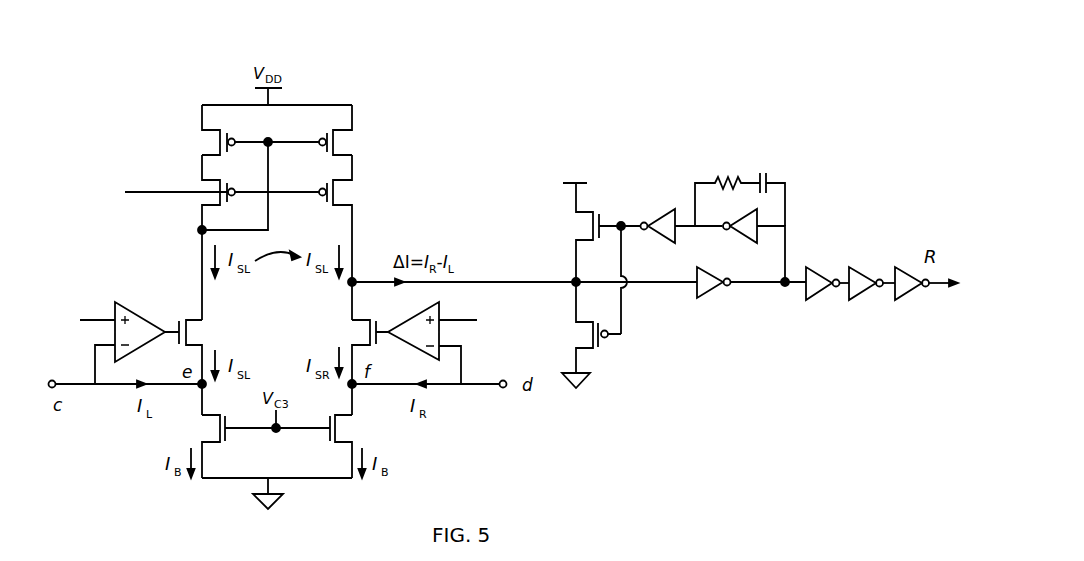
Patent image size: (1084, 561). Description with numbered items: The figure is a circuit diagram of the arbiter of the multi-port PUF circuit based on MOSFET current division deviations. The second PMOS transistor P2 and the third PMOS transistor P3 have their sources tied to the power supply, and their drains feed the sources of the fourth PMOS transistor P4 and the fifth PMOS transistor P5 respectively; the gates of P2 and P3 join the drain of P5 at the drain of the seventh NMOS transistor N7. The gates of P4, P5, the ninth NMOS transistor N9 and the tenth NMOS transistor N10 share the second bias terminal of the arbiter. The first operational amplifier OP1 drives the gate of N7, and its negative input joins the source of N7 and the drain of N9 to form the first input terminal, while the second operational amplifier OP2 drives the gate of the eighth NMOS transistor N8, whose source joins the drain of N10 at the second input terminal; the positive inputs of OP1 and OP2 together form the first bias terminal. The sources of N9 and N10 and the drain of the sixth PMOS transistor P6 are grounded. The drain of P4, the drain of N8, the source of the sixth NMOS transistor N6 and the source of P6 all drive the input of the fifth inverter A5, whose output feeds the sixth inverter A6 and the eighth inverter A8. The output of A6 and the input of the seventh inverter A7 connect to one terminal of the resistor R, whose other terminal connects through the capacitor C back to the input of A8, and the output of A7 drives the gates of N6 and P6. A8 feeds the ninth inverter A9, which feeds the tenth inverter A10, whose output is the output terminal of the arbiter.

The third PMOS transistor P3 is at (221, 130).
The second PMOS transistor P2 is at (323, 130).
The fifth PMOS transistor P5 is at (201, 192).
The fourth PMOS transistor P4 is at (349, 237).
The seventh NMOS transistor N7 is at (205, 367).
The eighth NMOS transistor N8 is at (348, 367).
The ninth NMOS transistor N9 is at (225, 446).
The tenth NMOS transistor N10 is at (333, 446).
The sixth NMOS transistor N6 is at (584, 232).
The sixth PMOS transistor P6 is at (584, 335).
The first operational amplifier OP1 is at (112, 343).
The second operational amplifier OP2 is at (444, 343).
The fifth inverter A5 is at (751, 292).
The sixth inverter A6 is at (754, 245).
The seventh inverter A7 is at (672, 233).
The eighth inverter A8 is at (827, 292).
The ninth inverter A9 is at (872, 292).
The tenth inverter A10 is at (926, 292).
The resistor R is at (727, 171).
The capacitor C is at (763, 173).